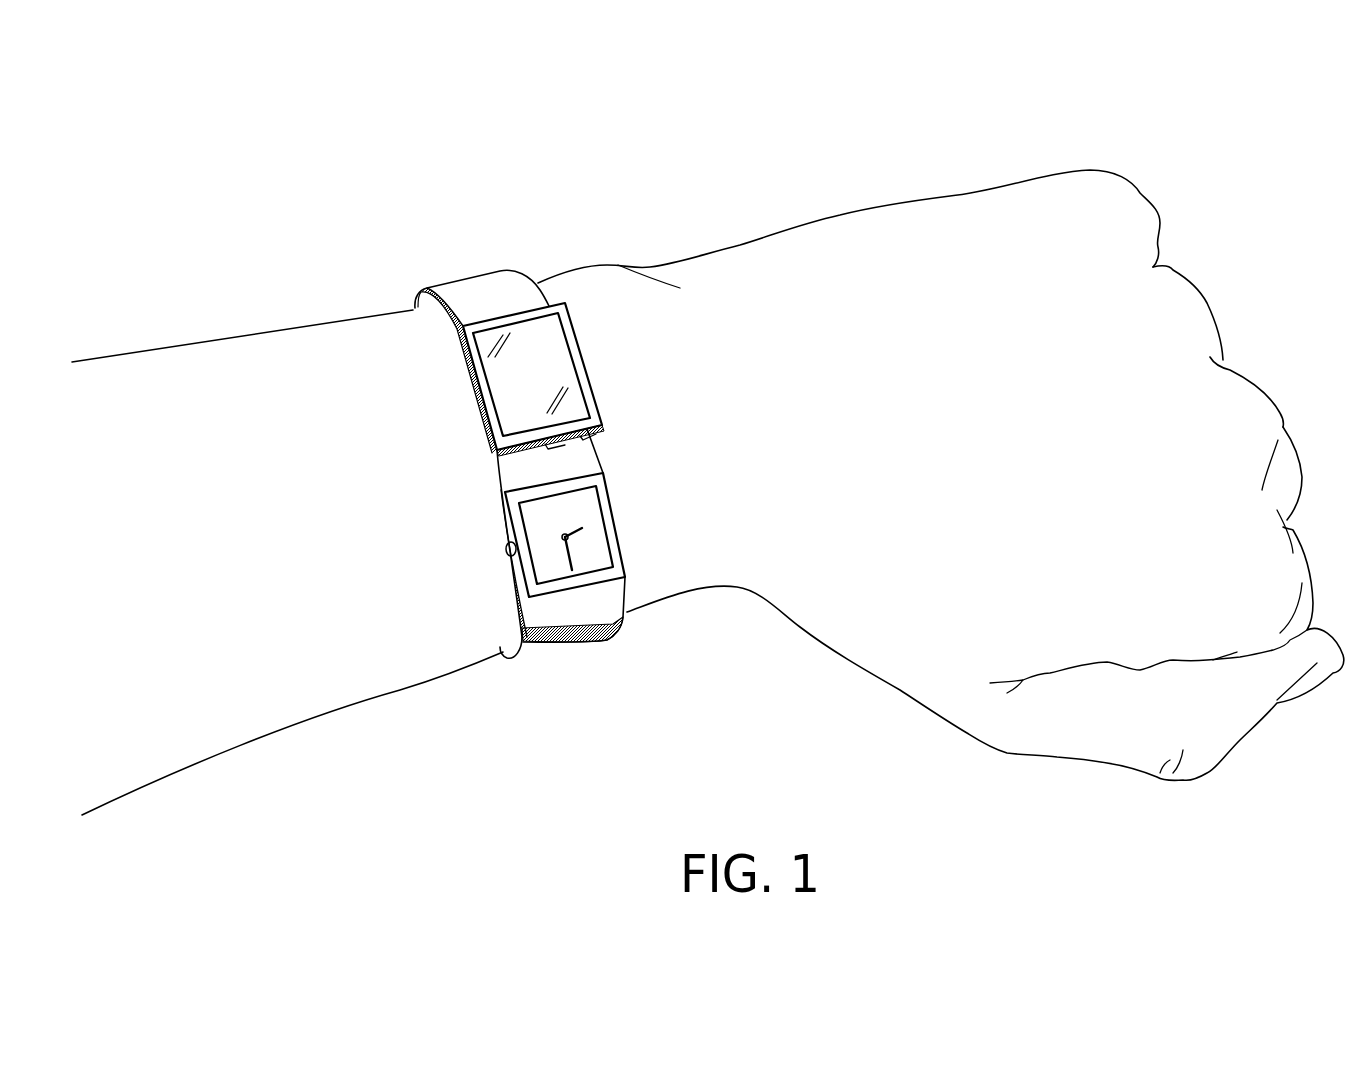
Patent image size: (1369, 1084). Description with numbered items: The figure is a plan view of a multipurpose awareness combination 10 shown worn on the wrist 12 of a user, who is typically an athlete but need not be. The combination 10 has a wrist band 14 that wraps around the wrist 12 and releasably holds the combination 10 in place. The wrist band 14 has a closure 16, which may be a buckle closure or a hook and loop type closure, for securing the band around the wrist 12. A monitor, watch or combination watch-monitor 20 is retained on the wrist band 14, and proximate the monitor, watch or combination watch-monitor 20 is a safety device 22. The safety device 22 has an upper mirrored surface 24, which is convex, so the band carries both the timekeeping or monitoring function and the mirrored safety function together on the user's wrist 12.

The multipurpose awareness combination 10 is at (551, 412).
The wrist 12 is at (373, 340).
The wrist band 14 is at (548, 618).
The closure 16 is at (590, 647).
The monitor, watch or combination watch-monitor 20 is at (592, 548).
The safety device 22 is at (563, 379).
The upper mirrored surface 24 is at (527, 357).